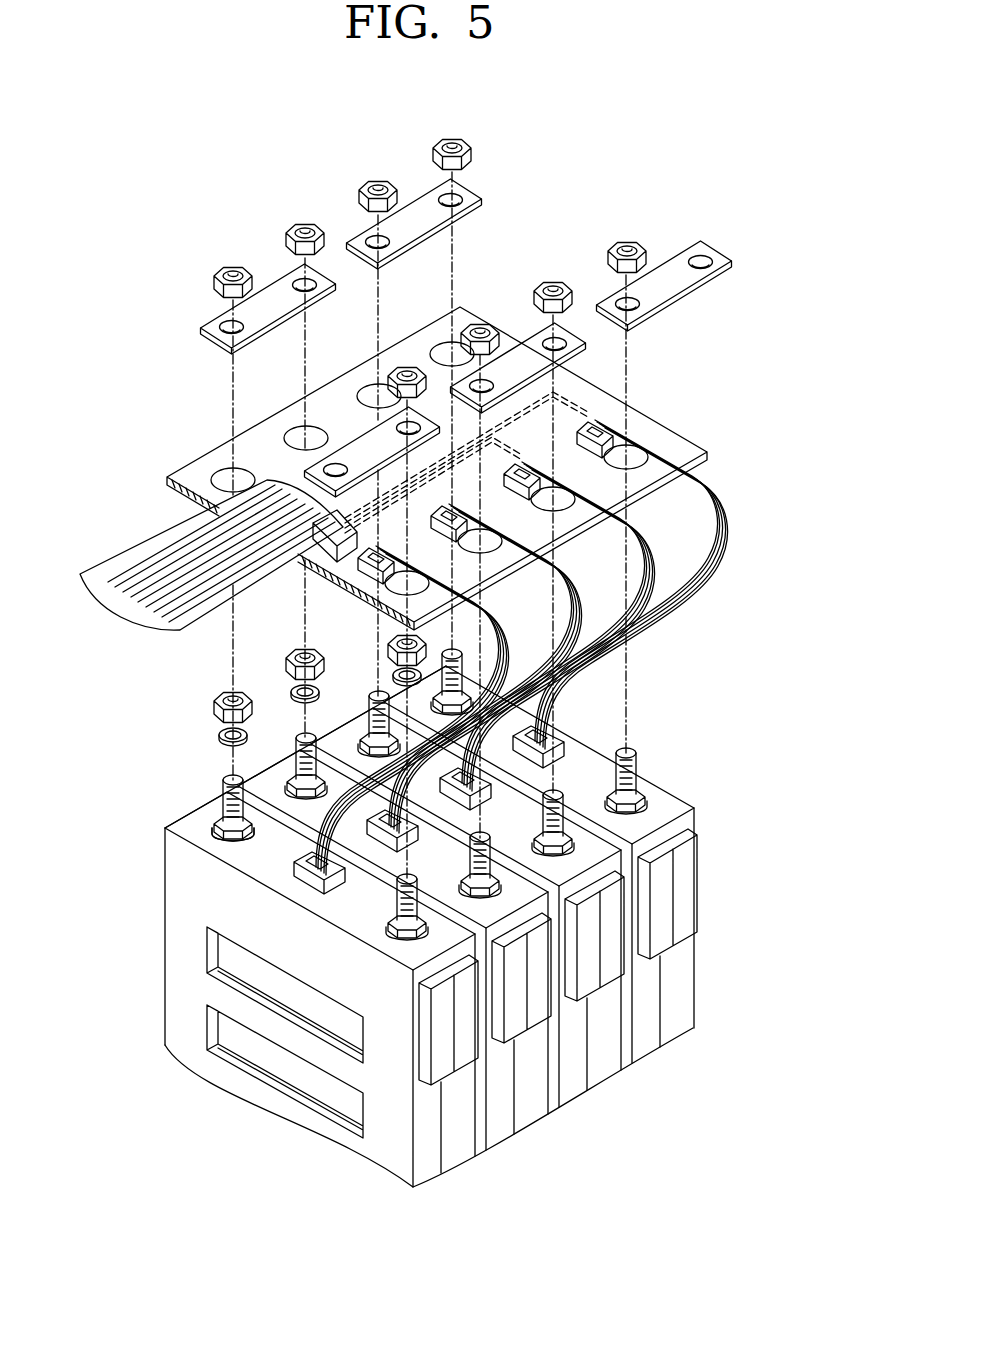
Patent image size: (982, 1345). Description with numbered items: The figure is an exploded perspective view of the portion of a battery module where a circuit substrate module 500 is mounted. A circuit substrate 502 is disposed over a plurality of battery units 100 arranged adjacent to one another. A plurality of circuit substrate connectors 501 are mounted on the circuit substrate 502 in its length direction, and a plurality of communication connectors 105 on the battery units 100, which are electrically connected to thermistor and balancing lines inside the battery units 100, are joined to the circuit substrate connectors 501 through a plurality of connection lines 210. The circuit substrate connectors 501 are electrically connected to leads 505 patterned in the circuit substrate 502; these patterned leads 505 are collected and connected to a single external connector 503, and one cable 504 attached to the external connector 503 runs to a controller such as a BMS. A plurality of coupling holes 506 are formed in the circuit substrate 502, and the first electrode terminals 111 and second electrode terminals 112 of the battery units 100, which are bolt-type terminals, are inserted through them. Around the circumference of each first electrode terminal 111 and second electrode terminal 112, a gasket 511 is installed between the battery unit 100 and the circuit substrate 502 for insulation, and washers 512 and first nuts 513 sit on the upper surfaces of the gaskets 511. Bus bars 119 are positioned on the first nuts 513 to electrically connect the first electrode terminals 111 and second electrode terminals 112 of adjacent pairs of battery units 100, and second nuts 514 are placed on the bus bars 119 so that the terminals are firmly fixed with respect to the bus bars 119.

The battery unit 100 is at (668, 1058).
The communication connector 105 is at (303, 877).
The first electrode terminal 111 is at (377, 697).
The second electrode terminal 112 is at (300, 730).
The bus bar 119 is at (482, 199).
The connection line 210 is at (722, 524).
The circuit substrate module 500 is at (122, 234).
The circuit substrate connector 501 is at (628, 441).
The circuit substrate 502 is at (205, 465).
The external connector 503 is at (320, 537).
The cable 504 is at (148, 565).
The lead 505 is at (588, 407).
The coupling hole 506 is at (305, 430).
The gasket 511 is at (210, 825).
The washer 512 is at (215, 737).
The first nut 513 is at (213, 700).
The second nut 514 is at (233, 265).